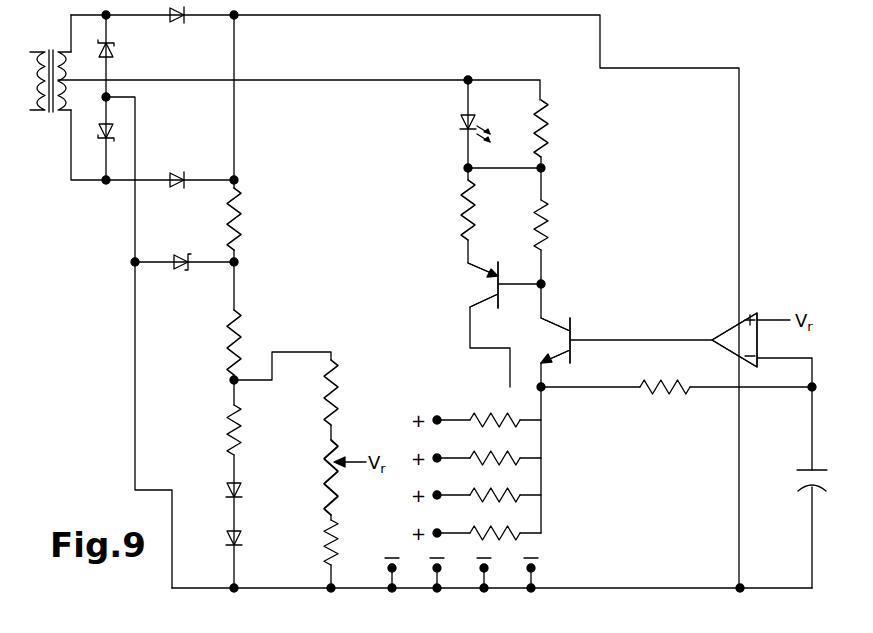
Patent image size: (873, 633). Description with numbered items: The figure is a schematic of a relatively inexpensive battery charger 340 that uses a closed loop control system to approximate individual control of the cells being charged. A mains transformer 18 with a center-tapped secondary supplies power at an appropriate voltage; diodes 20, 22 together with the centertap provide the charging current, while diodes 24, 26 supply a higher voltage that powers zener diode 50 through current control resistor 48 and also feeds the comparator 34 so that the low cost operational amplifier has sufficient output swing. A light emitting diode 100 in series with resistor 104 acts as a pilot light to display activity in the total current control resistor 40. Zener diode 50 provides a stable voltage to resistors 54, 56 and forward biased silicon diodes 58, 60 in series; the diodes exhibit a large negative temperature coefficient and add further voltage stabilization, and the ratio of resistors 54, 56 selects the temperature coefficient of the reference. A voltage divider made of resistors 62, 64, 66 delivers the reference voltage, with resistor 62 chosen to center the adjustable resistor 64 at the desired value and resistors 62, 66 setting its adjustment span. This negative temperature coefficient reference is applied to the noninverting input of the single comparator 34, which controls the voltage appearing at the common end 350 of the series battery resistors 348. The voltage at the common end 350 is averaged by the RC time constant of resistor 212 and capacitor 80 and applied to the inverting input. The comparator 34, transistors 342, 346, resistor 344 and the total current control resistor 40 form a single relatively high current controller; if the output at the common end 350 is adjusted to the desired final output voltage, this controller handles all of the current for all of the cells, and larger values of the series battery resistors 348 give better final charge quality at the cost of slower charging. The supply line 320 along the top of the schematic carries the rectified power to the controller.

The mains transformer 18 is at (50, 114).
The diode 20 is at (113, 46).
The diode 22 is at (100, 133).
The diode 24 is at (178, 22).
The diode 26 is at (176, 189).
The comparator 34 is at (716, 336).
The total current control resistor 40 is at (545, 122).
The current control resistor 48 is at (239, 212).
The zener diode 50 is at (183, 271).
The resistor 54 is at (234, 338).
The resistor 56 is at (232, 432).
The diode 58 is at (226, 492).
The diode 60 is at (226, 542).
The resistor 62 is at (342, 388).
The resistor 64 is at (328, 452).
The resistor 66 is at (332, 528).
The capacitor 80 is at (803, 468).
The light emitting diode 100 is at (459, 124).
The resistor 104 is at (462, 210).
The resistor 212 is at (668, 397).
The supply line 320 is at (645, 0).
The battery charger 340 is at (620, 592).
The transistor 342 is at (480, 298).
The resistor 344 is at (548, 228).
The transistor 346 is at (553, 322).
The series battery resistors 348 is at (491, 530).
The common end 350 is at (548, 393).